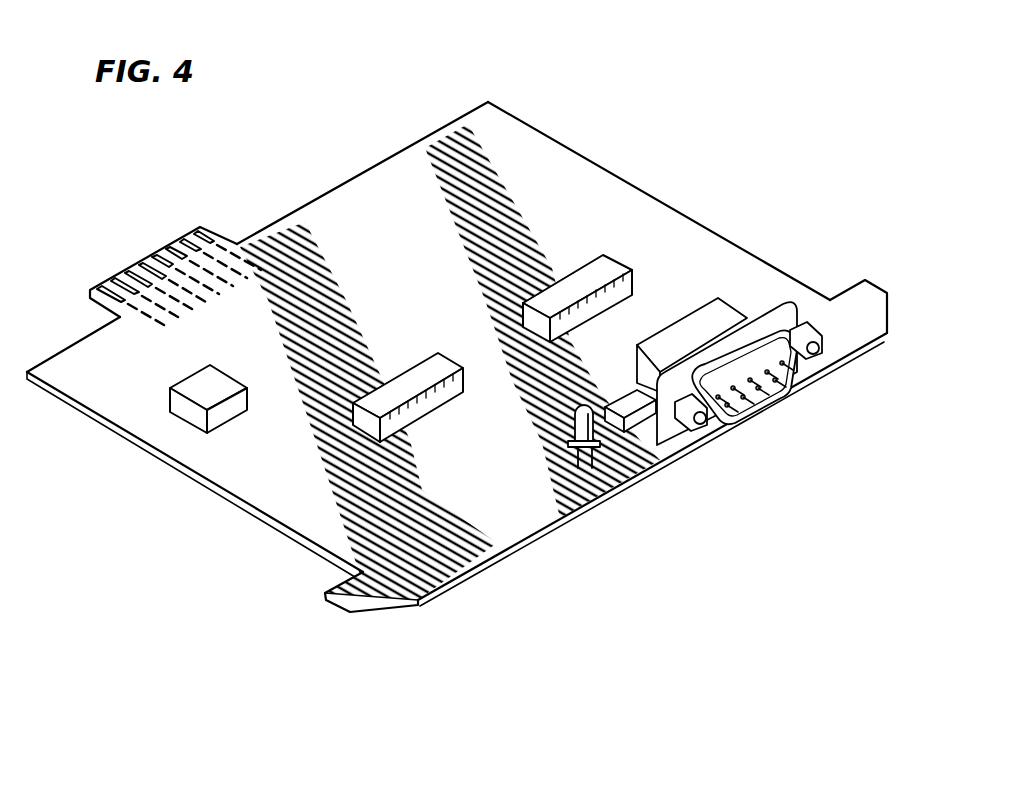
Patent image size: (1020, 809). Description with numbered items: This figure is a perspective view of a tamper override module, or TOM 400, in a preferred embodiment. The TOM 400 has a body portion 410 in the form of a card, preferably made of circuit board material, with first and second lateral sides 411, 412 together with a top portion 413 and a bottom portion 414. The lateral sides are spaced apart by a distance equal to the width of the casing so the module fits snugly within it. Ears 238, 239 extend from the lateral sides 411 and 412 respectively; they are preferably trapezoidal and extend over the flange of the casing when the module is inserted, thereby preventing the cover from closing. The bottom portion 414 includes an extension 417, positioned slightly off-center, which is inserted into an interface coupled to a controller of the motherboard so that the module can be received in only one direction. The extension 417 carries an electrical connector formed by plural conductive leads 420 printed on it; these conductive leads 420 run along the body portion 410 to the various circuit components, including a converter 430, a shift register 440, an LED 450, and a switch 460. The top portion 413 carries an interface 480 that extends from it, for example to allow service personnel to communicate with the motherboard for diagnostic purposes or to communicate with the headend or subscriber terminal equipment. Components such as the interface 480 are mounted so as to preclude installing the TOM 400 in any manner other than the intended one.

The tamper override module 400 is at (625, 155).
The body portion 410 is at (207, 488).
The first lateral side 411 is at (268, 523).
The second lateral side 412 is at (697, 220).
The top portion 413 is at (603, 510).
The bottom portion 414 is at (335, 188).
The extension 417 is at (216, 234).
The conductive leads 420 is at (153, 253).
The converter 430 is at (602, 285).
The shift register 440 is at (427, 377).
The LED 450 is at (580, 405).
The switch 460 is at (200, 400).
The interface 480 is at (757, 415).
The ear 238 is at (878, 283).
The ear 239 is at (362, 618).